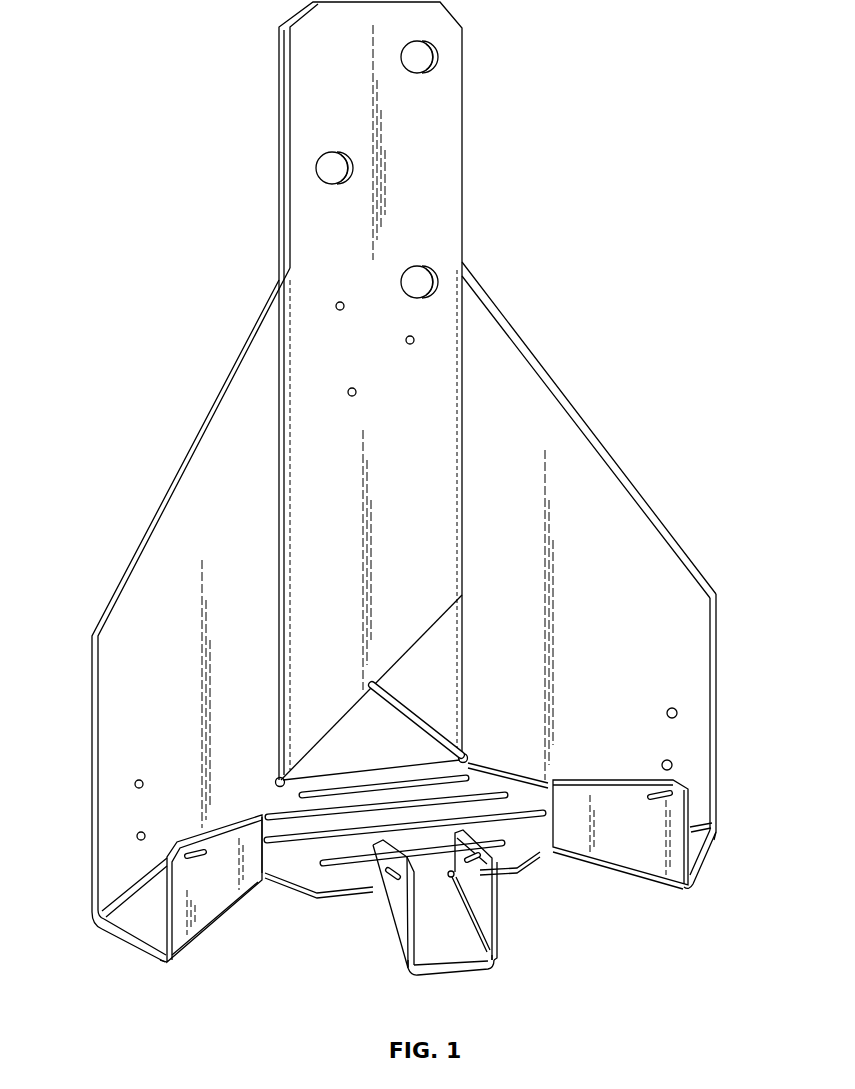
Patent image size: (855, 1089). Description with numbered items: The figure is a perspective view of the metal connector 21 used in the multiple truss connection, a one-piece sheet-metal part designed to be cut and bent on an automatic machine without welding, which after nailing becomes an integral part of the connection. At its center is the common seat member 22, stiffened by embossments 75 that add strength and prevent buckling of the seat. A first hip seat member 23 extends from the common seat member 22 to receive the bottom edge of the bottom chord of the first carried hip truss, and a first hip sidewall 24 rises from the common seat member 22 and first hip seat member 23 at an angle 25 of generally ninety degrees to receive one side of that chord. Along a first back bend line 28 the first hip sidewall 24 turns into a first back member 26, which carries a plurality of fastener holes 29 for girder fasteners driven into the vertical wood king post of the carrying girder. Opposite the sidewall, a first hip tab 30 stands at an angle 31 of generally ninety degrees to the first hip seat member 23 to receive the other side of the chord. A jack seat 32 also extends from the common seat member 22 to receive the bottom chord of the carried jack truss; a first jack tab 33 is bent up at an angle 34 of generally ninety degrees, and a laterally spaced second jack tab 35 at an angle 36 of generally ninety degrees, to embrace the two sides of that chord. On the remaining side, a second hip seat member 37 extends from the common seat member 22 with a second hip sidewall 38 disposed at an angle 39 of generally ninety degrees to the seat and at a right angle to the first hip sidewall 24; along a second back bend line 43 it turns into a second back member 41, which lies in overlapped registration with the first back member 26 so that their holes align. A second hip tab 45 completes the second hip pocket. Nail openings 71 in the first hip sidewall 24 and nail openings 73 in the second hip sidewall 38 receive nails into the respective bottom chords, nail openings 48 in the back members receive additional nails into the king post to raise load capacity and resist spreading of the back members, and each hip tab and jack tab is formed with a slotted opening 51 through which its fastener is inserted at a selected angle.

The metal connector 21 is at (548, 361).
The common seat member 22 is at (378, 795).
The first hip seat member 23 is at (135, 929).
The first hip sidewall 24 is at (120, 733).
The angle 25 is at (118, 923).
The first back member 26 is at (323, 212).
The first back bend line 28 is at (284, 507).
The fastener holes 29 is at (349, 170).
The first hip tab 30 is at (199, 908).
The angle 31 is at (148, 940).
The jack seat 32 is at (452, 958).
The first jack tab 33 is at (398, 918).
The angle 34 is at (437, 962).
The second jack tab 35 is at (497, 909).
The angle 36 is at (472, 953).
The second hip seat member 37 is at (697, 857).
The second hip sidewall 38 is at (692, 638).
The angle 39 is at (698, 842).
The second back member 41 is at (430, 690).
The second back bend line 43 is at (463, 632).
The second hip tab 45 is at (653, 853).
The nail openings 48 is at (344, 312).
The slotted opening 51 is at (195, 860).
The nail openings 71 is at (142, 789).
The nail openings 73 is at (677, 712).
The embossments 75 is at (287, 812).